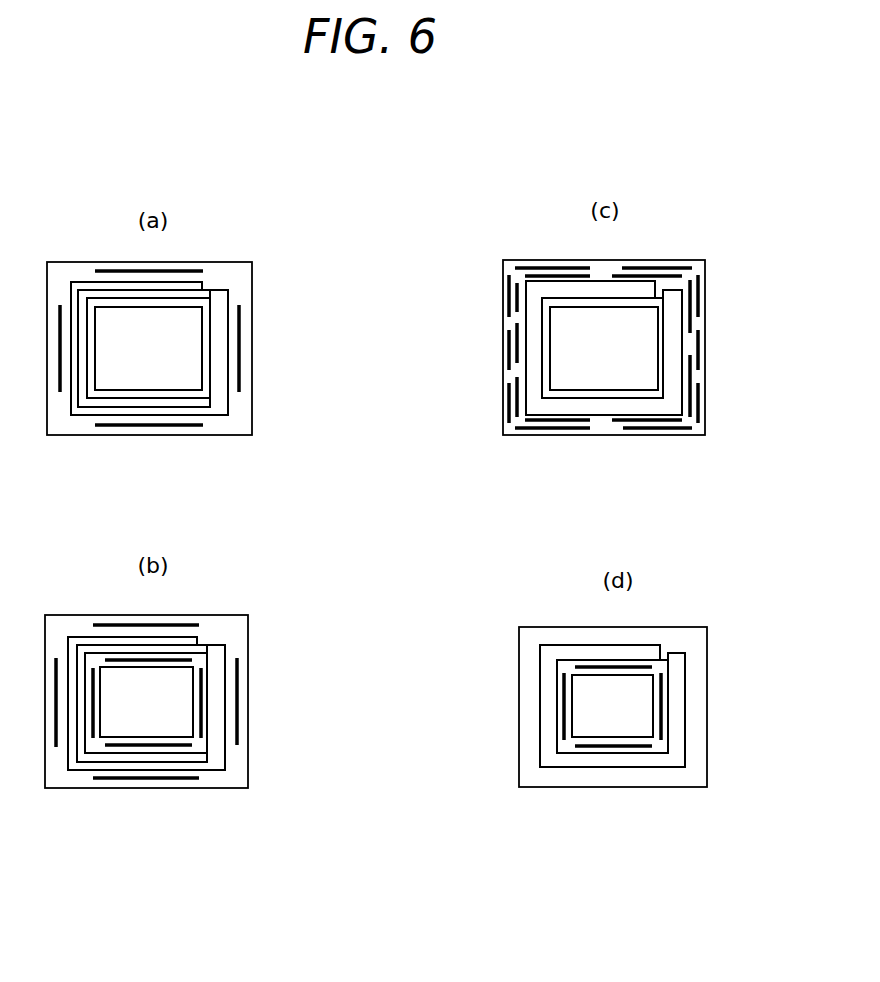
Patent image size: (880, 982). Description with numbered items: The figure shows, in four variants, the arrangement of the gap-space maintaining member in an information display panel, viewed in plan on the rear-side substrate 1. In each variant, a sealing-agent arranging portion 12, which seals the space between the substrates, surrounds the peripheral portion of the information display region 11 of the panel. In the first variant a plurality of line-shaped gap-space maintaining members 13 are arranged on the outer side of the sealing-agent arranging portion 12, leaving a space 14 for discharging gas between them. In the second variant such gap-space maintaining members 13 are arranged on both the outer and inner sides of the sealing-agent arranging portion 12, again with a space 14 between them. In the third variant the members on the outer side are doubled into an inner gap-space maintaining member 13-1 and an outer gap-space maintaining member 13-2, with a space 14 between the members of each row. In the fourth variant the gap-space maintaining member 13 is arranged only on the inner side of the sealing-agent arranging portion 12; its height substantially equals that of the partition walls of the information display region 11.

The substrate 1 is at (200, 435).
The information display region 11 is at (192, 322).
The sealing-agent arranging portion 12 is at (222, 340).
The gap-space maintaining member 13 is at (242, 385).
The inner gap-space maintaining member 13-1 is at (690, 318).
The outer gap-space maintaining member 13-2 is at (700, 290).
The space for discharging gas 14 is at (238, 413).